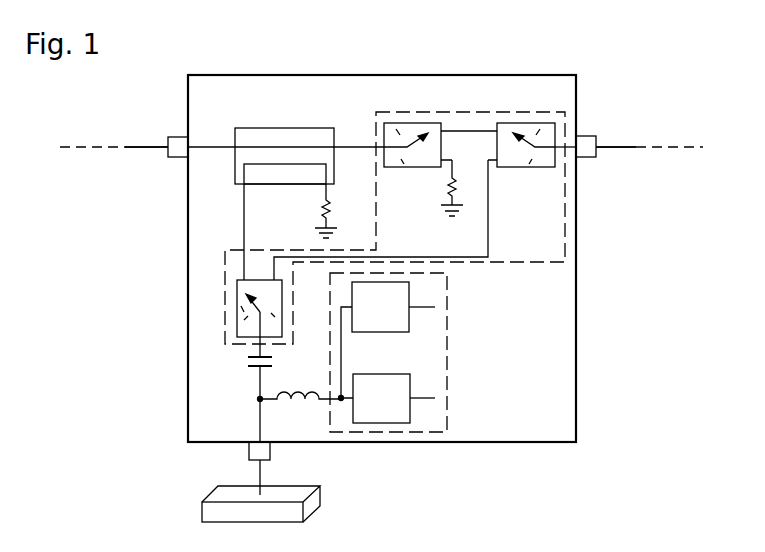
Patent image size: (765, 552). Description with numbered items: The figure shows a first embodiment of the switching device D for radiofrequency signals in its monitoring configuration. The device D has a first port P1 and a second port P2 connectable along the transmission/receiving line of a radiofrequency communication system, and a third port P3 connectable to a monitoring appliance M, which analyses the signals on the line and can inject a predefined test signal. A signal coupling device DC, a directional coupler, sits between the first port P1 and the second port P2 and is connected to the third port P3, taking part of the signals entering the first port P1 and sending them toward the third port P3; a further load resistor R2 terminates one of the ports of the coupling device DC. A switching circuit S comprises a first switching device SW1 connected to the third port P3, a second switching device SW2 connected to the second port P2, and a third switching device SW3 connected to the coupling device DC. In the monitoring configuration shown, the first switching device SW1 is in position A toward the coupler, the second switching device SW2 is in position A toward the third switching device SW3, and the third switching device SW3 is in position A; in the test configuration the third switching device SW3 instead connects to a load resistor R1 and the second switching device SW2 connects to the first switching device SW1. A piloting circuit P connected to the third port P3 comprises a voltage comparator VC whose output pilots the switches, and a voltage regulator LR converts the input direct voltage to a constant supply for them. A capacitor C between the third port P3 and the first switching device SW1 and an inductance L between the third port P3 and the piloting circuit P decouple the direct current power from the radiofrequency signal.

The switching device D is at (580, 328).
The first port P1 is at (178, 139).
The second port P2 is at (585, 135).
The third port P3 is at (258, 450).
The signal coupling device DC is at (277, 138).
The load resistor R1 is at (438, 188).
The further load resistor R2 is at (313, 211).
The first switching device SW1 is at (233, 308).
The second switching device SW2 is at (522, 126).
The third switching device SW3 is at (415, 125).
The switching circuit S is at (509, 263).
The capacitor C is at (249, 355).
The inductance L is at (301, 411).
The piloting circuit P is at (447, 363).
The voltage comparator VC is at (395, 318).
The voltage regulator LR is at (396, 410).
The monitoring appliance M is at (312, 505).